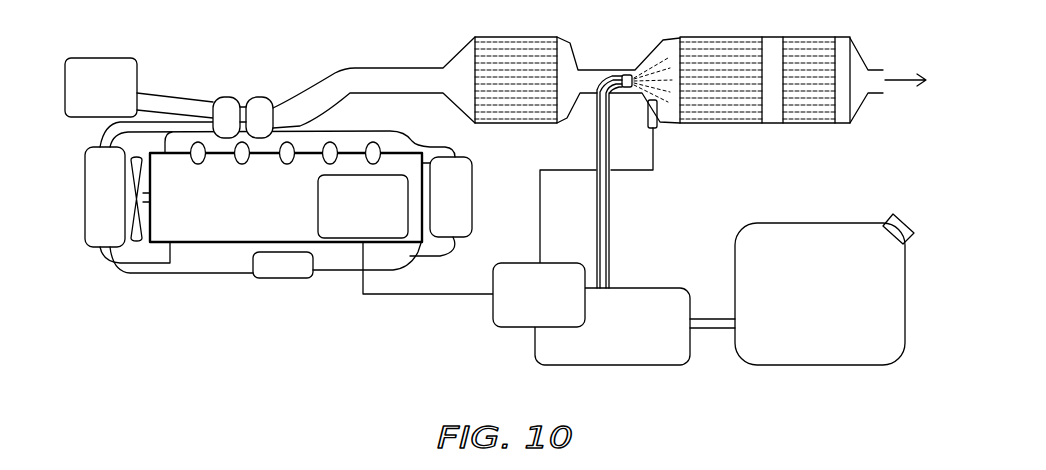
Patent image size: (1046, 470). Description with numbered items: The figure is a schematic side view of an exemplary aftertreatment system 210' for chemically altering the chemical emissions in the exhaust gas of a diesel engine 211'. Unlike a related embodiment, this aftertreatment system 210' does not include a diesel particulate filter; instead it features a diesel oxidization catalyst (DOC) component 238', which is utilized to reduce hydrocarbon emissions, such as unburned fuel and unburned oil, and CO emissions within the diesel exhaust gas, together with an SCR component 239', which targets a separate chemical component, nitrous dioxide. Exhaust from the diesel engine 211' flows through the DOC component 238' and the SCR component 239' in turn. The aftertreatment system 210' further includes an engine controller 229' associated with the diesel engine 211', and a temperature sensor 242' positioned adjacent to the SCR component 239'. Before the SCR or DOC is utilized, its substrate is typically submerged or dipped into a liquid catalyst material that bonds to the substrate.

The aftertreatment system 210' is at (344, 78).
The diesel engine 211' is at (274, 237).
The engine controller 229' is at (478, 270).
The diesel oxidization catalyst (DOC) component 238' is at (681, 61).
The SCR component 239' is at (672, 51).
The temperature sensor 242' is at (646, 181).